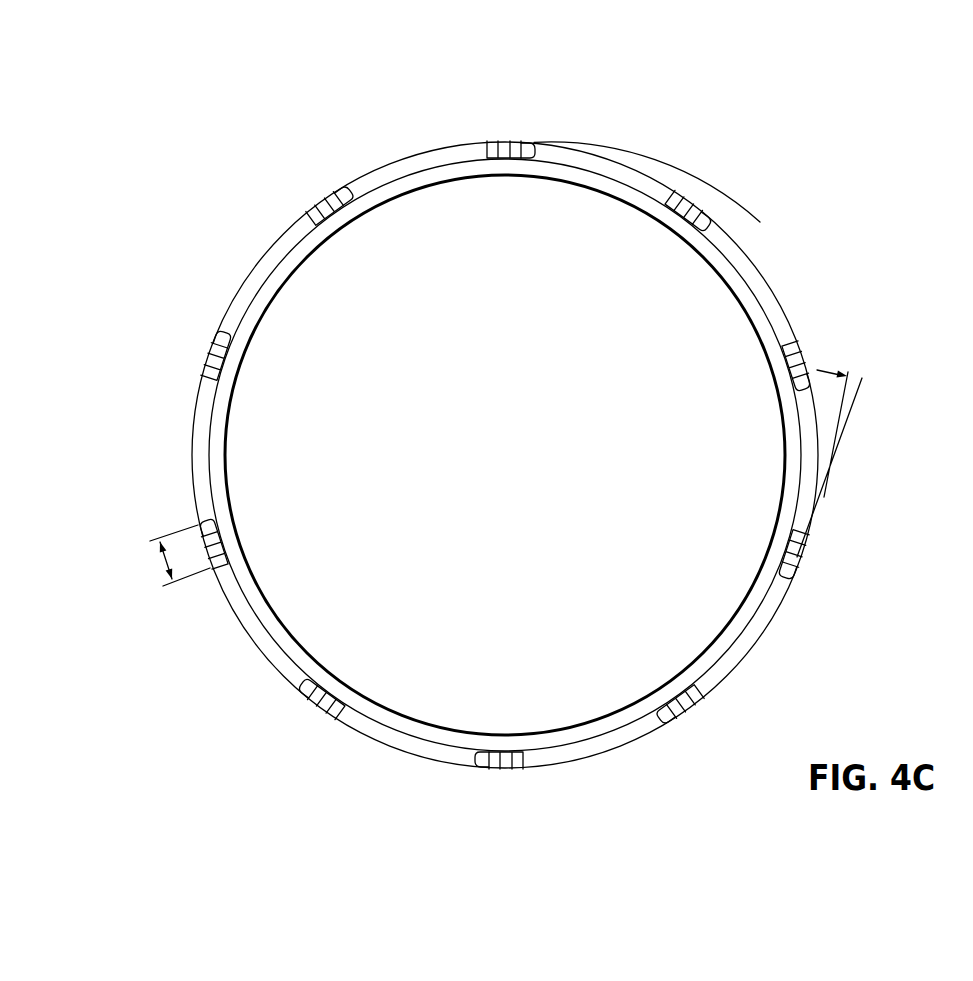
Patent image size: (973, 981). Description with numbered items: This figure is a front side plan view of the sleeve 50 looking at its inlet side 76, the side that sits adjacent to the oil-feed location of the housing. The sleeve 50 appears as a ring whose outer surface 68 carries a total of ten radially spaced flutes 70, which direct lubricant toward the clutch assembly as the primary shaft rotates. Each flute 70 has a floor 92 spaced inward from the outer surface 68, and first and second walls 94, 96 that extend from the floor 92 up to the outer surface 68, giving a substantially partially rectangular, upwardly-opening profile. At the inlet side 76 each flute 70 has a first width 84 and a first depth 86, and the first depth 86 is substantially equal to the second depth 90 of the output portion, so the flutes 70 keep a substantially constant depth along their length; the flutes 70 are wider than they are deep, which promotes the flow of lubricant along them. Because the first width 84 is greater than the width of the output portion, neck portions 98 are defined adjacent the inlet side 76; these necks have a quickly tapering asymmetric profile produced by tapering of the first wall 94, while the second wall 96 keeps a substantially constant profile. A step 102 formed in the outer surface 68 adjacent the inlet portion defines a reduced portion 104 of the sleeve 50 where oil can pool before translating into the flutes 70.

The sleeve 50 is at (492, 120).
The outer surface 68 is at (625, 153).
The flutes 70 is at (693, 202).
The inlet side 76 is at (730, 276).
The first width 84 is at (166, 562).
The first depth 86 is at (883, 458).
The second depth 90 is at (864, 383).
The floor 92 is at (207, 360).
The first wall 94 is at (315, 212).
The second wall 96 is at (343, 190).
The neck portions 98 is at (528, 138).
The step 102 is at (768, 302).
The reduced portion 104 is at (770, 339).